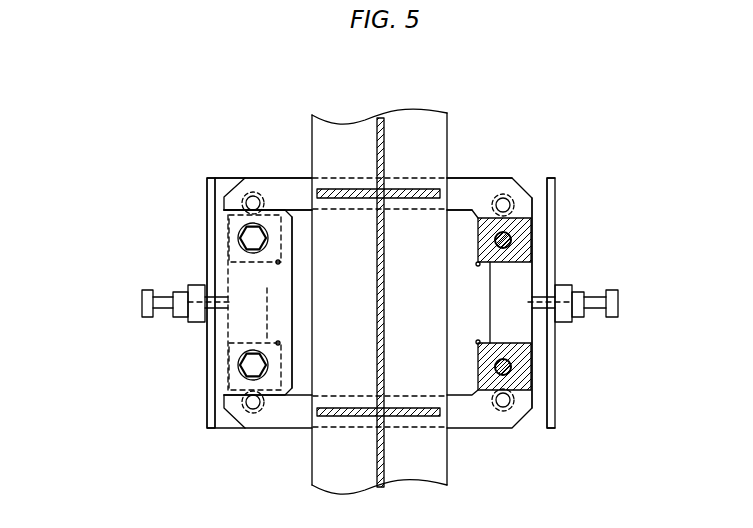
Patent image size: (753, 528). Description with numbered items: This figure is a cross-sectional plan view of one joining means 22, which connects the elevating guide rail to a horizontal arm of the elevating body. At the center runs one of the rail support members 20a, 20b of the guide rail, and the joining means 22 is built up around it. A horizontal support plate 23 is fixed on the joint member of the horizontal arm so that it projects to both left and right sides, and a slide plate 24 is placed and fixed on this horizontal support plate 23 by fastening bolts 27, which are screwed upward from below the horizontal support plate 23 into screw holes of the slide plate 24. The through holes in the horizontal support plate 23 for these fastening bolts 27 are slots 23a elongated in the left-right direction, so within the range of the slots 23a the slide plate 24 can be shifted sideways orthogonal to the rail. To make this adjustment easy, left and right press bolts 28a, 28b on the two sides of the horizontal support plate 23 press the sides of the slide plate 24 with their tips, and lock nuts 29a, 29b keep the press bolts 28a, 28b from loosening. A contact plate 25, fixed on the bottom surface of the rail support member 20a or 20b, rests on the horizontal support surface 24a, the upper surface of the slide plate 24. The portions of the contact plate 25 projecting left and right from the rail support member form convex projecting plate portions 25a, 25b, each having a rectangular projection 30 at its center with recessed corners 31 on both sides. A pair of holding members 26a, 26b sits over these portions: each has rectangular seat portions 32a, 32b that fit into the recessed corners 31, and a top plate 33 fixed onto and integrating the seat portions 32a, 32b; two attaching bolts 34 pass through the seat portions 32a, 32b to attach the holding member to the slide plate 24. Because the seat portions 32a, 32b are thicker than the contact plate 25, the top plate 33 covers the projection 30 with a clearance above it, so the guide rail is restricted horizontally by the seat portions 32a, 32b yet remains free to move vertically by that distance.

The rail support member 20a is at (448, 130).
The rail support member 20b is at (448, 130).
The joining means 22 is at (208, 429).
The horizontal support plate 23 is at (208, 182).
The slot 23a is at (535, 188).
The slide plate 24 is at (265, 179).
The horizontal support surface 24a is at (502, 291).
The contact plate 25 is at (407, 205).
The convex projecting plate portion 25a is at (283, 303).
The convex projecting plate portion 25b is at (502, 323).
The holding member 26a is at (215, 335).
The holding member 26b is at (537, 255).
The fastening bolt 27 is at (251, 198).
The press bolt 28a is at (142, 301).
The press bolt 28b is at (619, 302).
The lock nut 29a is at (180, 312).
The lock nut 29b is at (577, 292).
The rectangular projection 30 is at (267, 288).
The recessed corner 31 is at (273, 232).
The seat portion 32a is at (220, 380).
The seat portion 32b is at (226, 236).
The top plate 33 is at (280, 326).
The attaching bolt 34 is at (250, 237).